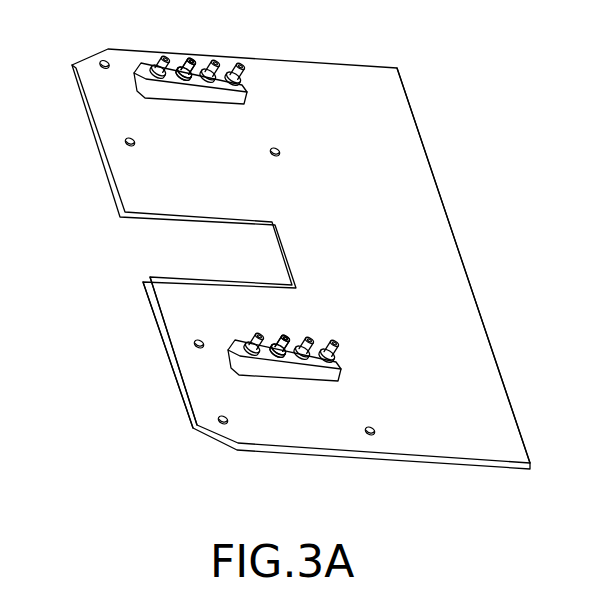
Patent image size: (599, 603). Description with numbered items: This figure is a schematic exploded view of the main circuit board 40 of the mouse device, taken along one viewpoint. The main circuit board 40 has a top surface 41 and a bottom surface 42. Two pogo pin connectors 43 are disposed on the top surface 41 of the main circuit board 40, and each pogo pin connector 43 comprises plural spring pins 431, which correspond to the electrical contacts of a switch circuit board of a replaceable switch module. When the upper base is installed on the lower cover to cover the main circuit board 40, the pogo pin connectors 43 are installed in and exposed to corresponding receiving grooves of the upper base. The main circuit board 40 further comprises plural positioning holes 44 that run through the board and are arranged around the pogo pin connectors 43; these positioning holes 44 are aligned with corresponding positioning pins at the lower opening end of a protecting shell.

The main circuit board 40 is at (89, 122).
The top surface 41 is at (420, 198).
The bottom surface 42 is at (164, 350).
The pogo pin connector 43 is at (172, 82).
The spring pin 431 is at (192, 53).
The positioning hole 44 is at (103, 61).